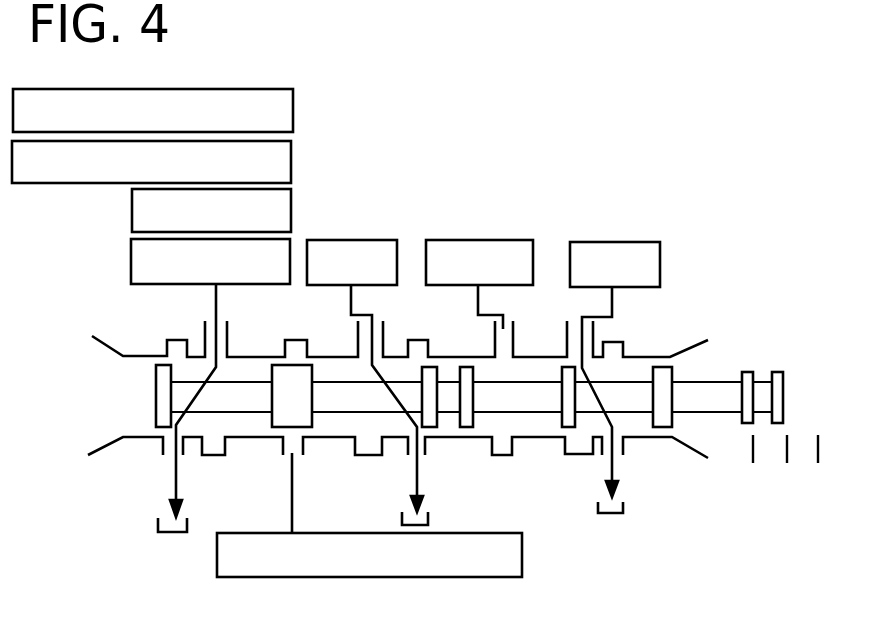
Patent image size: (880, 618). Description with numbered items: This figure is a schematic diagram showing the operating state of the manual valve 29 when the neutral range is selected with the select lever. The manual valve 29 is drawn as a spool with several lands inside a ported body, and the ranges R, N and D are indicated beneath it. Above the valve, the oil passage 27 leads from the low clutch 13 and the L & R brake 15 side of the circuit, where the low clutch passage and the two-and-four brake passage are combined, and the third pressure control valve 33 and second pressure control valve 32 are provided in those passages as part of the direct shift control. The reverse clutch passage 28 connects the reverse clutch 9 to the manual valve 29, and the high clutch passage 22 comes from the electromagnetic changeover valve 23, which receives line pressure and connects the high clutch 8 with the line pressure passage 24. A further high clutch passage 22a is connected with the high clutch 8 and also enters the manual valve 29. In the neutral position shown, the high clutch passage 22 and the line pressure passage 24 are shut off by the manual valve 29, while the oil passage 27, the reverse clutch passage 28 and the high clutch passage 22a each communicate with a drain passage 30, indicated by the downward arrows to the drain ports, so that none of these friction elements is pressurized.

The third pressure control valve 33 is at (294, 112).
The second pressure control valve 32 is at (292, 160).
The low clutch 13 is at (132, 213).
The L & R brake 15 is at (131, 264).
The oil passage 27 is at (215, 313).
The reverse clutch 9 is at (352, 240).
The electromagnetic changeover valve 23 is at (478, 240).
The high clutch 8 is at (610, 242).
The reverse clutch passage 28 is at (350, 313).
The high clutch passage 22 is at (478, 313).
The high clutch passage 22a is at (613, 300).
The manual valve 29 is at (702, 352).
The drain passage 30 is at (173, 483).
The line pressure passage 24 is at (293, 474).